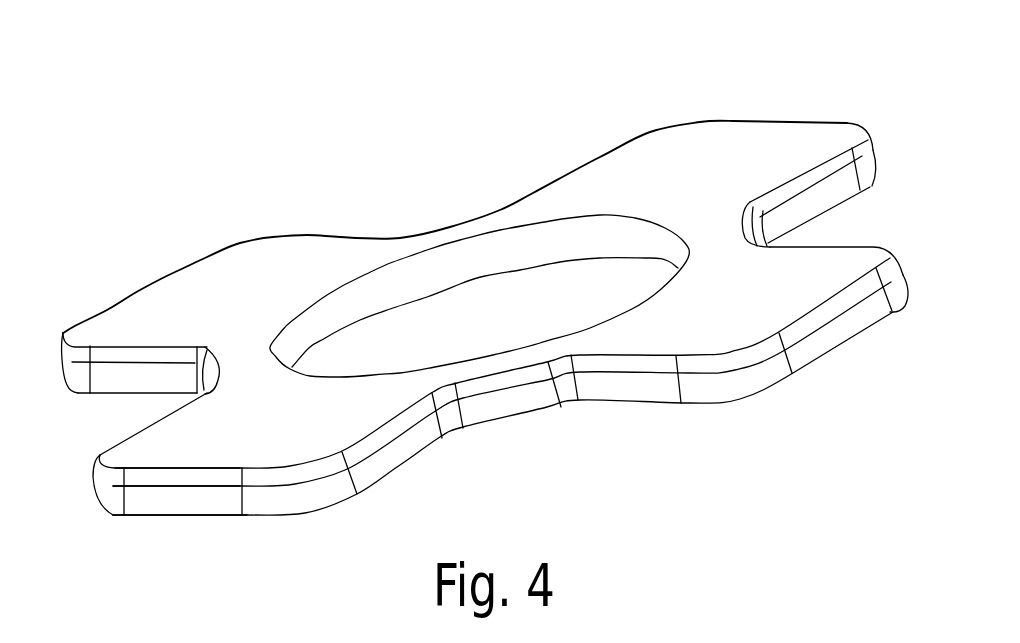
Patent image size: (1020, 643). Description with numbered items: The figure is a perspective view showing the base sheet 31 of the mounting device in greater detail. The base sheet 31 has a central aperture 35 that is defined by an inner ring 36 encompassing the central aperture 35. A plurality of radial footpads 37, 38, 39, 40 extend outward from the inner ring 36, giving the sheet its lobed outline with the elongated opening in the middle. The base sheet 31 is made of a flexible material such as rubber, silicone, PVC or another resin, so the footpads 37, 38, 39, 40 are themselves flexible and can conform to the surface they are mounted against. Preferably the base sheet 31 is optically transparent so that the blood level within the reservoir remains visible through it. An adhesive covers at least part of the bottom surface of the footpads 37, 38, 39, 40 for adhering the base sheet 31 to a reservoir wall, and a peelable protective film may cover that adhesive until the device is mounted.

The base sheet 31 is at (268, 535).
The central aperture 35 is at (493, 308).
The inner ring 36 is at (256, 352).
The radial footpad 37 is at (140, 308).
The radial footpad 38 is at (733, 152).
The radial footpad 39 is at (815, 277).
The radial footpad 40 is at (183, 448).